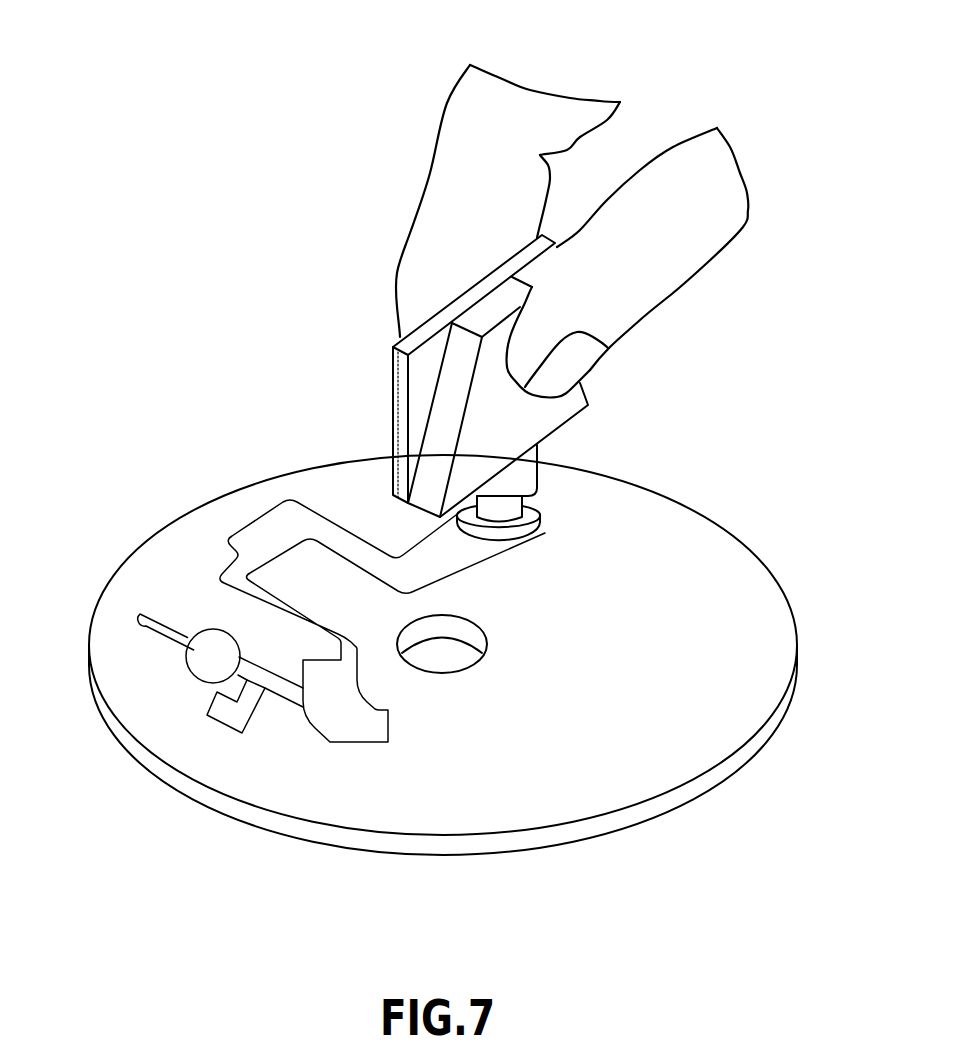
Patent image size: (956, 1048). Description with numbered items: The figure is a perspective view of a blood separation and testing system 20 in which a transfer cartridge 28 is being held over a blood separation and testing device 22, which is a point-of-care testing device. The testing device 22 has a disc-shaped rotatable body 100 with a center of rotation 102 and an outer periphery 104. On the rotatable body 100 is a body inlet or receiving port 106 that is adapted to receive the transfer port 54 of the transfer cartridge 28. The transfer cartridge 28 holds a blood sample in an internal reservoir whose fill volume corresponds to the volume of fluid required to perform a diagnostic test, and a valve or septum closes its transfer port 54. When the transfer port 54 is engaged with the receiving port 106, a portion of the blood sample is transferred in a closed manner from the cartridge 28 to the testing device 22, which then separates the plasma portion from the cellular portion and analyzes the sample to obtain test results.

The blood separation and testing system 20 is at (222, 318).
The blood separation and testing device 22 is at (713, 552).
The transfer cartridge 28 is at (403, 382).
The transfer port 54 is at (505, 508).
The rotatable body 100 is at (713, 788).
The center of rotation 102 is at (440, 653).
The outer periphery 104 is at (89, 668).
The receiving port 106 is at (537, 532).